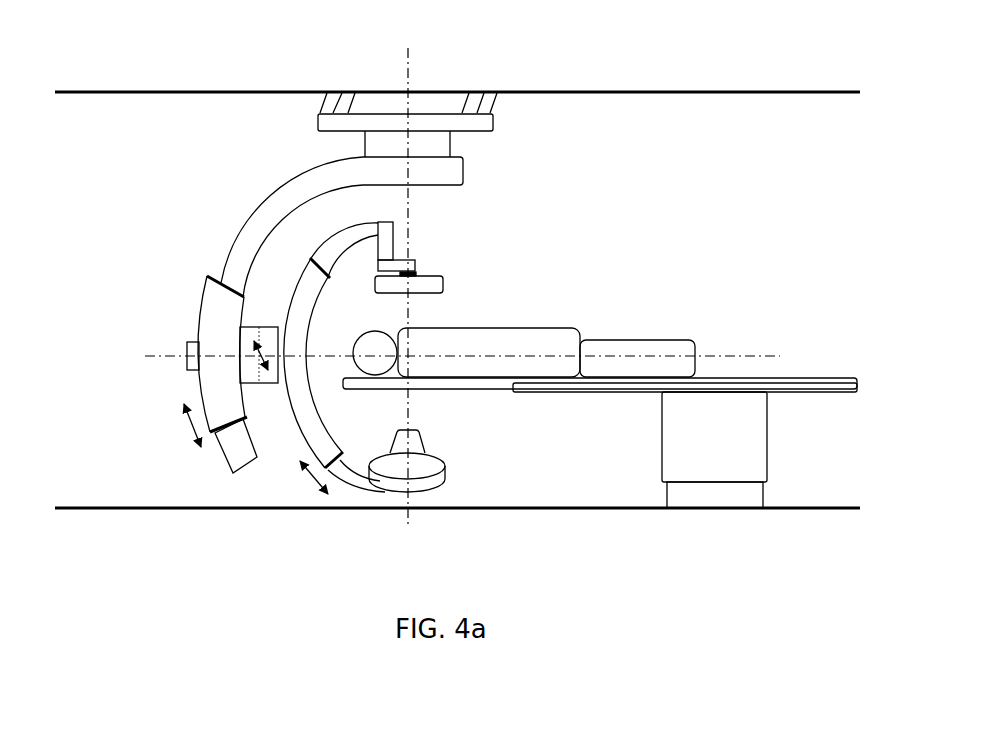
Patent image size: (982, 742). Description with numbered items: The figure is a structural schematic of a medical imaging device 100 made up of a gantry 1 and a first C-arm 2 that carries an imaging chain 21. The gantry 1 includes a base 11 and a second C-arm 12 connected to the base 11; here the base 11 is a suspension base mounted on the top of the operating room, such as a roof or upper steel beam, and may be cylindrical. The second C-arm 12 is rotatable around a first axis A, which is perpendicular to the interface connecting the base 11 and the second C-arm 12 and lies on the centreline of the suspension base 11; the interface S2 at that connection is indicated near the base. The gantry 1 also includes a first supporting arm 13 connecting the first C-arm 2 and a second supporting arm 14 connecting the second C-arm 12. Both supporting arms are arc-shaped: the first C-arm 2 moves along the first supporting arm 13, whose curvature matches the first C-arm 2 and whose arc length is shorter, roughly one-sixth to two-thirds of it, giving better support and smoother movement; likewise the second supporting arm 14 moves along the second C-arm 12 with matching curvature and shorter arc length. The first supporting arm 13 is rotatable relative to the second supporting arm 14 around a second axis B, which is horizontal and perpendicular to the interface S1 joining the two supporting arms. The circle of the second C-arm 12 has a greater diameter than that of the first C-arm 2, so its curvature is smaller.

The medical imaging device 100 is at (268, 146).
The gantry 1 is at (273, 221).
The base 11 is at (433, 128).
The second C-arm 12 is at (227, 263).
The second supporting arm 14 is at (210, 385).
The first C-arm 2 is at (391, 388).
The first supporting arm 13 is at (303, 418).
The imaging chain 21 is at (422, 277).
The interface S1 is at (258, 327).
The second sliding direction S2 is at (452, 150).
The first axis A is at (408, 288).
The second axis B is at (453, 357).